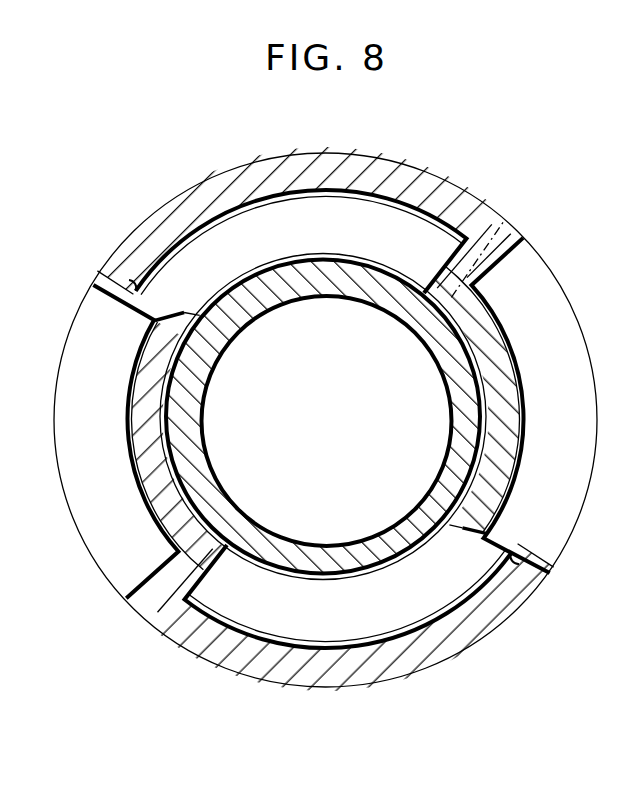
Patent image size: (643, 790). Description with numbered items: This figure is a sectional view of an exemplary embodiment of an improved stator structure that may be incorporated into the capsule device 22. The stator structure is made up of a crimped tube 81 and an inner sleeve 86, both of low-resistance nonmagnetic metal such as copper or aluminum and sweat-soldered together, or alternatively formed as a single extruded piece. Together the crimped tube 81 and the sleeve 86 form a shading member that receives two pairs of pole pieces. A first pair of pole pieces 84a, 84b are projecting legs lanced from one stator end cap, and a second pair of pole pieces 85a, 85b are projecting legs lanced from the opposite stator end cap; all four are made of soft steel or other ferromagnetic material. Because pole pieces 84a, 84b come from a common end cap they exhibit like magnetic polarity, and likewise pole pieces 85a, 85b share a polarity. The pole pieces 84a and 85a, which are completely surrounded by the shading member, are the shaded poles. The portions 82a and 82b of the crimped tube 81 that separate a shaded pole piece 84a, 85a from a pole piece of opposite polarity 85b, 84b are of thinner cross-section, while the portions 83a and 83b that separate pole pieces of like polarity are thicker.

The capsule device 22 is at (182, 690).
The crimped tube 81 is at (168, 190).
The thinner portion of crimped tube 82a is at (147, 272).
The thinner portion of crimped tube 82b is at (492, 567).
The thicker portion of crimped tube 83a is at (473, 262).
The thicker portion of crimped tube 83b is at (161, 589).
The pole piece 84a is at (314, 205).
The pole piece 84b is at (562, 322).
The pole piece 85a is at (380, 633).
The pole piece 85b is at (88, 527).
The inner sleeve 86 is at (200, 427).